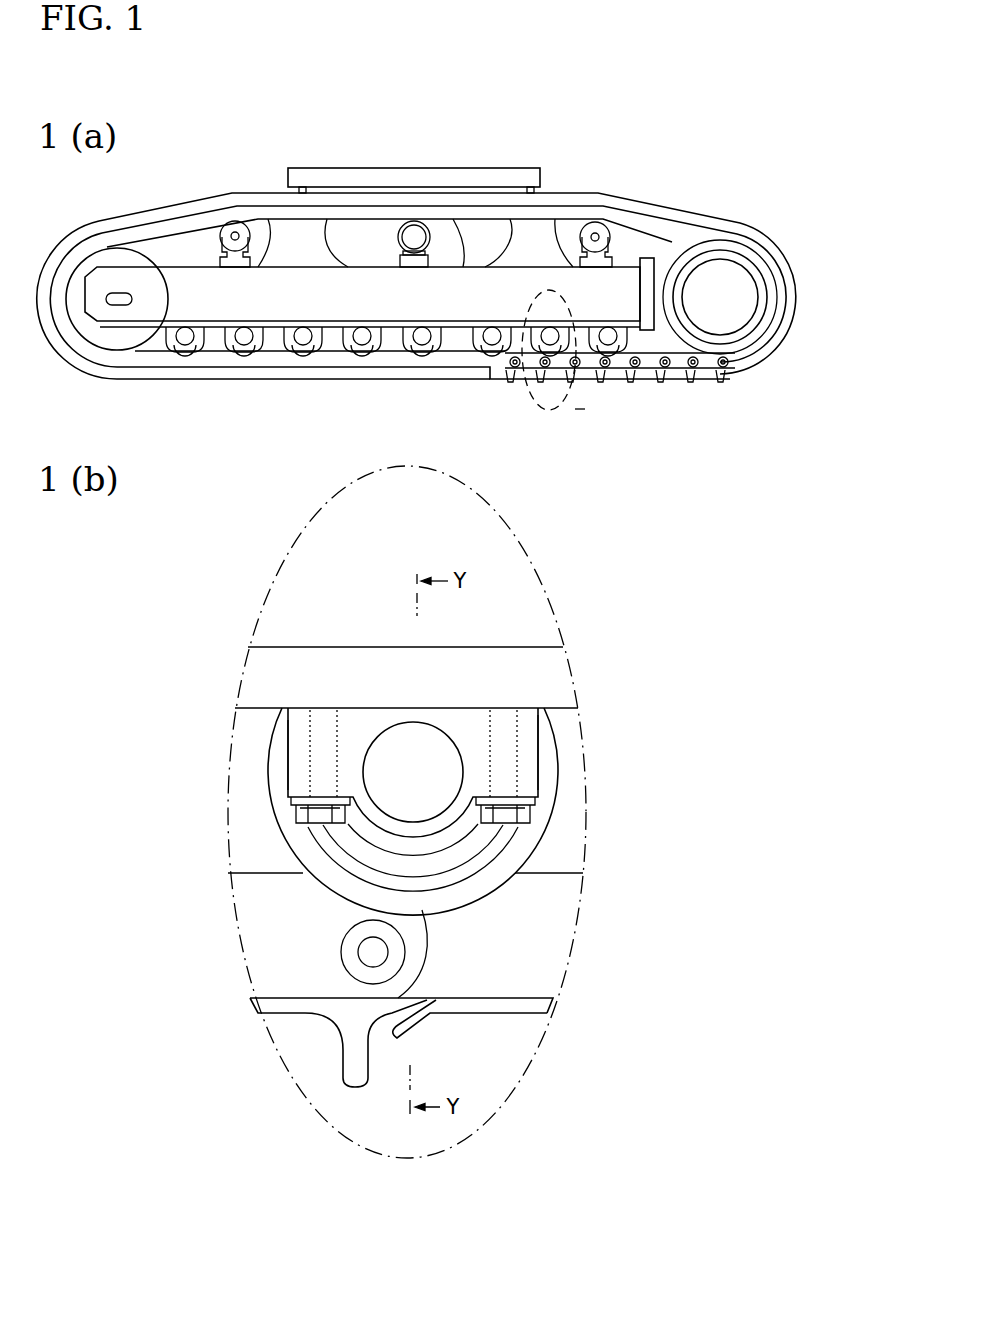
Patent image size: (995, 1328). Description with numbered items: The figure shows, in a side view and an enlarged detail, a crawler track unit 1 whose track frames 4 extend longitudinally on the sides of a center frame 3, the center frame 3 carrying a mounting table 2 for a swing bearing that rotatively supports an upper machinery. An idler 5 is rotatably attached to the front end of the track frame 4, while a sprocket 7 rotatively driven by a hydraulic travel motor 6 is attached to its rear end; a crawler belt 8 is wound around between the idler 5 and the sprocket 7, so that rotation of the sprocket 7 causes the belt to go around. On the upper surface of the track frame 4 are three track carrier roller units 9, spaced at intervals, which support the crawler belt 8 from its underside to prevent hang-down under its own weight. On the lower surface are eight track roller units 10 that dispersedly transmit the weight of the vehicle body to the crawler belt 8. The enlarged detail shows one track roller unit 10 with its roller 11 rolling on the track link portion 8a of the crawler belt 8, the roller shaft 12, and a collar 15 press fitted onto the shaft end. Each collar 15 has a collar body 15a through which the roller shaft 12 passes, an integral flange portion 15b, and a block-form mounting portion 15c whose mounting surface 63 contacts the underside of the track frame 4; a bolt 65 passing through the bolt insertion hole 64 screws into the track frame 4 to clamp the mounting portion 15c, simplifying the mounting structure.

The crawler track unit 1 is at (637, 147).
The mounting table 2 is at (486, 171).
The center frame 3 is at (542, 243).
The track frame 4 is at (460, 270).
The idler 5 is at (107, 255).
The hydraulic travel motor 6 is at (727, 275).
The sprocket 7 is at (668, 250).
The crawler belt 8 is at (605, 380).
The track link portion 8a is at (243, 922).
The track carrier roller unit 9 is at (220, 237).
The track roller unit 10 is at (253, 332).
The roller 11 is at (543, 840).
The roller shaft 12 is at (413, 770).
The collar 15 is at (543, 765).
The collar body 15a is at (430, 835).
The flange portion 15b is at (477, 860).
The mounting portion 15c is at (537, 777).
The mounting surface 63 is at (474, 702).
The bolt insertion hole 64 is at (316, 720).
The bolt 65 is at (297, 812).